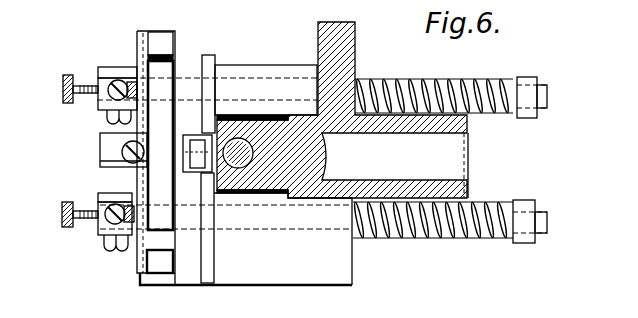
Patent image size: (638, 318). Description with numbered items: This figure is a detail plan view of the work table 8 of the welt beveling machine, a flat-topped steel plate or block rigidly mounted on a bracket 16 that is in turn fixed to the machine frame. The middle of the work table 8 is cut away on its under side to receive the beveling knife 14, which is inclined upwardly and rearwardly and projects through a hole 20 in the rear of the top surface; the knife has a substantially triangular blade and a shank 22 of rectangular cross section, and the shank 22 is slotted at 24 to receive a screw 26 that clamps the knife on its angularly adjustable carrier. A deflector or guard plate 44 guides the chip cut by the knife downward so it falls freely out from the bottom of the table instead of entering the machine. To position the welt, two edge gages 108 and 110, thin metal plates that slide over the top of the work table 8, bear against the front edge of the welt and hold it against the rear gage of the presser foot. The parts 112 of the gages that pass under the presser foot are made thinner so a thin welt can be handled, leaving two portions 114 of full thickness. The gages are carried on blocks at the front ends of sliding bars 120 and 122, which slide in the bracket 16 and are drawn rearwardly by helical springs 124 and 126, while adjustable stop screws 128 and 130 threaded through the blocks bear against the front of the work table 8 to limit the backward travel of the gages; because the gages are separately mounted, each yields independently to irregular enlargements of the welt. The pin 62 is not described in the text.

The work table 8 is at (168, 278).
The beveling knife 14 is at (210, 167).
The bracket 16 is at (310, 274).
The hole 20 is at (212, 172).
The shank 22 is at (107, 154).
The slot 24 is at (110, 147).
The screw 26 is at (133, 163).
The deflector or guard plate 44 is at (219, 120).
The pivot pin 62 is at (240, 162).
The edge gage 108 is at (138, 53).
The edge gage 110 is at (137, 254).
The thinner parts of the edge gages 112 is at (168, 72).
The full-thickness portions of the edge gages 114 is at (152, 54).
The sliding bar 120 is at (543, 107).
The sliding bar 122 is at (541, 230).
The helical spring 124 is at (482, 115).
The helical spring 126 is at (473, 238).
The adjustable stop screw 128 is at (66, 87).
The adjustable stop screw 130 is at (68, 222).